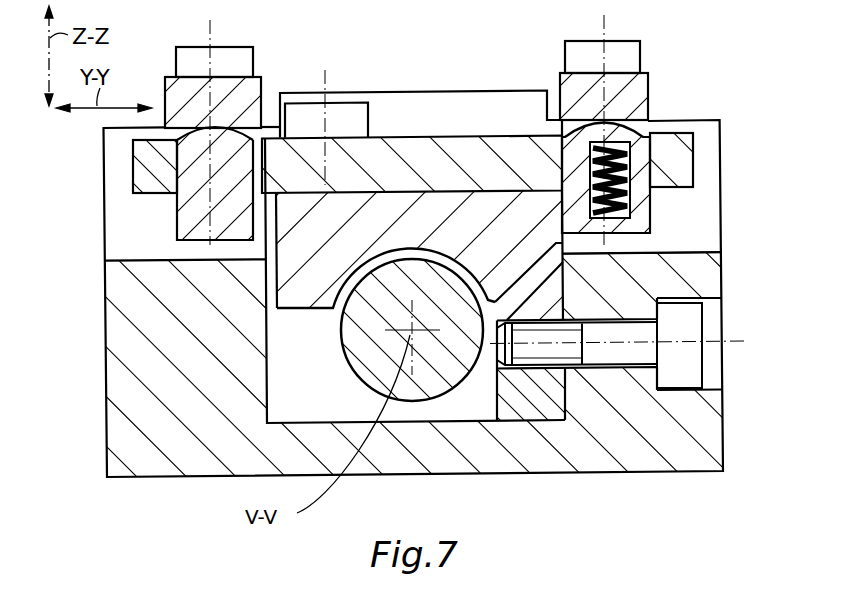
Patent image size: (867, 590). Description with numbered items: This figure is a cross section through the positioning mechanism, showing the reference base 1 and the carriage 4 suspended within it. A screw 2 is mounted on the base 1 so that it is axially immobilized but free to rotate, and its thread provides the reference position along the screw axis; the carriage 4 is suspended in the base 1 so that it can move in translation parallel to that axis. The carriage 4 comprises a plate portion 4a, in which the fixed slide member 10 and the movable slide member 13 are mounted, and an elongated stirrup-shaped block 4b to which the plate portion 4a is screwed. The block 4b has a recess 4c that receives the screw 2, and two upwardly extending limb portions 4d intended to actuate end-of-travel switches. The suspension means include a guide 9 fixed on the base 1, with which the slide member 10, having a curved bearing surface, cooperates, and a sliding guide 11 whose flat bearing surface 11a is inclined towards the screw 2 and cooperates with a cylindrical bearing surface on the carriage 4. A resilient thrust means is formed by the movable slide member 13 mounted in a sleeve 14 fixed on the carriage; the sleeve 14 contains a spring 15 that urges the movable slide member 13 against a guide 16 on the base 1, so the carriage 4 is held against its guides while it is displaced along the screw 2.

The reference base 1 is at (710, 440).
The screw 2 is at (375, 352).
The carriage 4 is at (478, 138).
The plate portion 4a is at (384, 152).
The block 4b is at (320, 283).
The recess 4c is at (390, 250).
The limb portions 4d is at (440, 112).
The guide 9 is at (243, 92).
The slide member 10 is at (190, 212).
The sliding guide 11 is at (543, 403).
The flat bearing surface 11a is at (550, 293).
The movable slide member 13 is at (632, 128).
The sleeve 14 is at (648, 226).
The spring 15 is at (600, 207).
The guide 16 is at (630, 93).